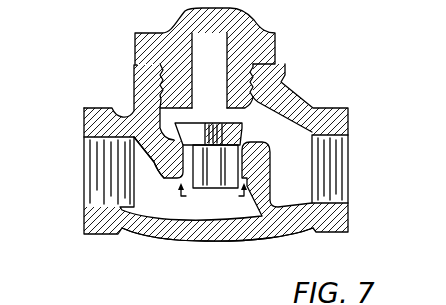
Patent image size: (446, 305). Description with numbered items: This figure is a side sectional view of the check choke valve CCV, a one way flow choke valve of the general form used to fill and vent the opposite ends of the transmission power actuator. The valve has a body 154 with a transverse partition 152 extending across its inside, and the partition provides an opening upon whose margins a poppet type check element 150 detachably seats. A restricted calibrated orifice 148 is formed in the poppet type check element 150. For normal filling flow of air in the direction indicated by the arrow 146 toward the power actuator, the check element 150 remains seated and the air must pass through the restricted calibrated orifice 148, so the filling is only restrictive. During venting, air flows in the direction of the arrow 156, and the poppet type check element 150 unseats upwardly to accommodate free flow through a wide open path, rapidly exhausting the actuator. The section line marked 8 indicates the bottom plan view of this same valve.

The arrow 146 is at (223, 163).
The restricted calibrated orifice 148 is at (226, 116).
The poppet type check element 150 is at (178, 120).
The transverse partition 152 is at (147, 158).
The body 154 is at (262, 228).
The arrow 156 is at (73, 172).
The check choke valve CCV is at (283, 82).
The section line 8- 8 is at (207, 200).